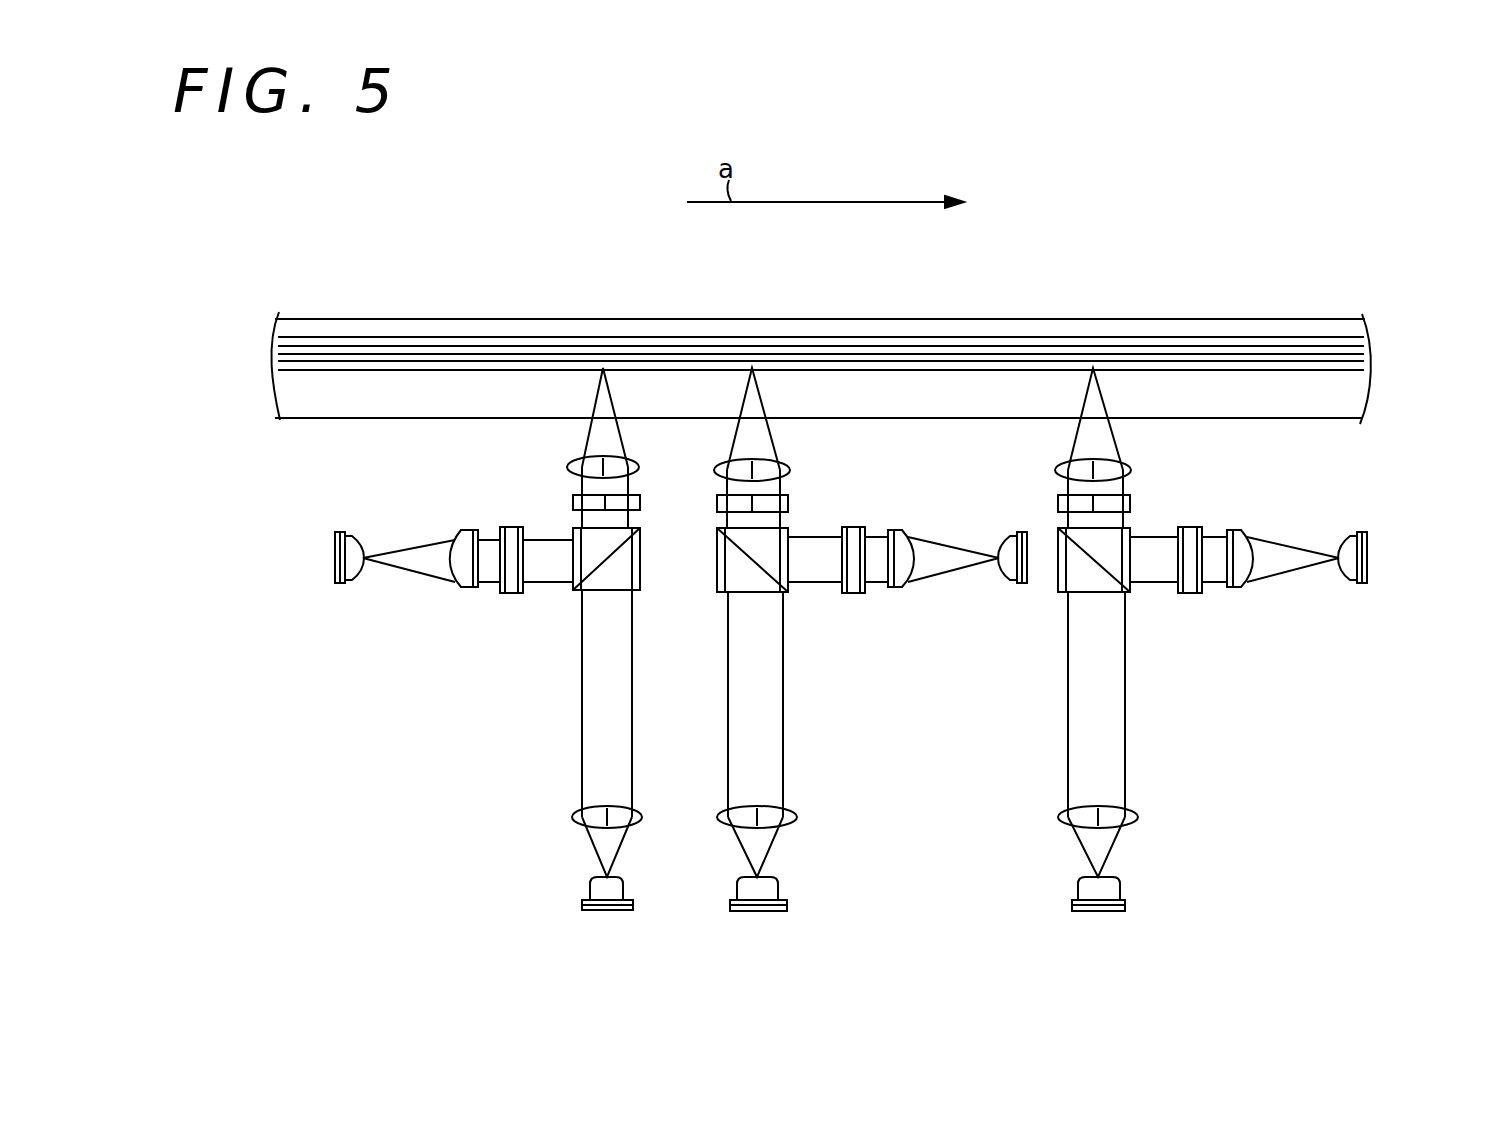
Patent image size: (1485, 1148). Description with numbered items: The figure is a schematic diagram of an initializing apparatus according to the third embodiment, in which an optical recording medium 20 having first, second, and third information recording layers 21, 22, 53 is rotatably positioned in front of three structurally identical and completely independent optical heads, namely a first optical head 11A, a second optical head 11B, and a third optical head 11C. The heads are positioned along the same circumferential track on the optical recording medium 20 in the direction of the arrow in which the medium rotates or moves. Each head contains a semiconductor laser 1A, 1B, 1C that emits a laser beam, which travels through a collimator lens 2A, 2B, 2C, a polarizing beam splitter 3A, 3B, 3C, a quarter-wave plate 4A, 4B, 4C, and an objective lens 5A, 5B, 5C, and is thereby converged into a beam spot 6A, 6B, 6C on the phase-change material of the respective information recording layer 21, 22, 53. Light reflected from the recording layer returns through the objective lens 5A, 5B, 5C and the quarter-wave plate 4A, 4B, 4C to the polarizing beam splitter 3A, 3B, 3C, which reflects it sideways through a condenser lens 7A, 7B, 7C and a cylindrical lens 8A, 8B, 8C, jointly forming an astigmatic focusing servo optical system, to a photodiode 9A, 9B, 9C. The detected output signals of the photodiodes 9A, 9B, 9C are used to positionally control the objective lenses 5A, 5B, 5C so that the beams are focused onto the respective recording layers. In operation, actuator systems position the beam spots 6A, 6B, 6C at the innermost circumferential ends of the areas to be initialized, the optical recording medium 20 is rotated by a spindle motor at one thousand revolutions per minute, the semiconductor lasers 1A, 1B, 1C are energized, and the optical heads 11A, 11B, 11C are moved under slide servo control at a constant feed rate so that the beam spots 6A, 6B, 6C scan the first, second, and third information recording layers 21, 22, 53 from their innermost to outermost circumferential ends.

The semiconductor laser 1A is at (590, 893).
The semiconductor laser 1B is at (1120, 889).
The semiconductor laser 1C is at (780, 889).
The collimator lens 2A is at (577, 811).
The collimator lens 2B is at (1133, 812).
The collimator lens 2C is at (790, 812).
The polarizing beam splitter 3A is at (578, 594).
The polarizing beam splitter 3B is at (1126, 594).
The polarizing beam splitter 3C is at (786, 594).
The quarter-wave plate 4A is at (573, 503).
The quarter-wave plate 4B is at (1131, 503).
The quarter-wave plate 4C is at (789, 503).
The objective lens 5A is at (568, 469).
The objective lens 5B is at (1133, 471).
The objective lens 5C is at (790, 471).
The beam spot 6A is at (603, 368).
The beam spot 6B is at (1093, 368).
The beam spot 6C is at (752, 368).
The condenser lens 7A is at (503, 593).
The condenser lens 7B is at (1195, 593).
The condenser lens 7C is at (855, 593).
The cylindrical lens 8A is at (462, 531).
The cylindrical lens 8B is at (1245, 530).
The cylindrical lens 8C is at (900, 530).
The photodiode 9A is at (337, 576).
The photodiode 9B is at (1352, 584).
The photodiode 9C is at (1012, 584).
The first optical head 11A is at (579, 620).
The second optical head 11B is at (1118, 620).
The third optical head 11C is at (775, 620).
The optical recording medium 20 is at (1342, 407).
The first information recording layer 21 is at (1366, 385).
The second information recording layer 22 is at (1366, 349).
The third information recording layer 53 is at (1363, 322).